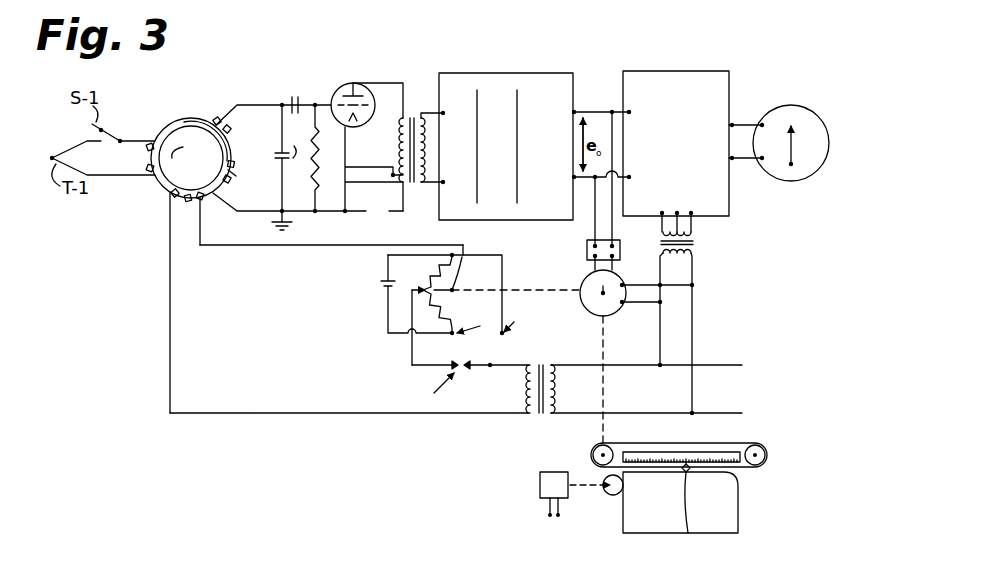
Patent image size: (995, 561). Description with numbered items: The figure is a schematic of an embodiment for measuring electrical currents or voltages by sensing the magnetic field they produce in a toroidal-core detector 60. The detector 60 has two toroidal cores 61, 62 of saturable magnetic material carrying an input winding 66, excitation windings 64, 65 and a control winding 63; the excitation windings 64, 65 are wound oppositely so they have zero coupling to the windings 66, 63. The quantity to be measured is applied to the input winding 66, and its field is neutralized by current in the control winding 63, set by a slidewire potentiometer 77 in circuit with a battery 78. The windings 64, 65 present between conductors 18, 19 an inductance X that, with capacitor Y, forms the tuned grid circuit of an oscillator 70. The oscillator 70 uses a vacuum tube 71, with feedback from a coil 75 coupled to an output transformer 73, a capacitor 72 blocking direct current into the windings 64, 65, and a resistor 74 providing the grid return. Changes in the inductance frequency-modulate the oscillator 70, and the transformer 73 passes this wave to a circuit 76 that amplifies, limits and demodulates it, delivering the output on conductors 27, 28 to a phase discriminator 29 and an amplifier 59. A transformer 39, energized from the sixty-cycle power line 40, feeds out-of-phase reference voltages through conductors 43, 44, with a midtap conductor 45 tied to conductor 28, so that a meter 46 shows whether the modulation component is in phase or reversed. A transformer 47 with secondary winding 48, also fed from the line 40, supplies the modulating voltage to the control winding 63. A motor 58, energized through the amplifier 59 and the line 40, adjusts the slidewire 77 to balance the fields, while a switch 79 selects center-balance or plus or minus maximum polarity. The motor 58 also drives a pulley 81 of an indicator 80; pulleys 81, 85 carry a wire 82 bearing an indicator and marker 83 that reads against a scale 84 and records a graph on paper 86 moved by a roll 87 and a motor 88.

The conductor 18 is at (246, 214).
The conductor 19 is at (241, 105).
The conductor 27 is at (598, 112).
The conductor 28 is at (580, 182).
The phase discriminator 29 is at (656, 71).
The transformer 39 is at (662, 253).
The electrical power line 40 is at (742, 365).
The conductor 43 is at (690, 233).
The conductor 44 is at (662, 233).
The conductor 45 is at (692, 245).
The meter 46 is at (781, 106).
The transformer 47 is at (540, 418).
The secondary winding 48 is at (525, 398).
The motor 58 is at (581, 298).
The amplifier 59 is at (586, 250).
The toroidal-core detector 60 is at (152, 208).
The toroidal core 61 is at (162, 128).
The toroidal core 62 is at (183, 115).
The control winding 63 is at (171, 204).
The excitation winding 64 is at (238, 122).
The excitation winding 65 is at (240, 160).
The input winding 66 is at (178, 158).
The oscillator 70 is at (401, 66).
The vacuum tube 71 is at (339, 94).
The capacitor 72 is at (296, 98).
The output transformer 73 is at (413, 118).
The resistor 74 is at (318, 172).
The coil 75 is at (393, 173).
The circuit 76 is at (520, 73).
The slidewire potentiometer 77 is at (465, 305).
The battery 78 is at (385, 285).
The switch 79 is at (470, 368).
The indicator 80 is at (655, 444).
The pulley 81 is at (594, 457).
The wire 82 is at (695, 445).
The indicator and marker 83 is at (690, 472).
The scale 84 is at (727, 452).
The pulley 85 is at (765, 456).
The paper 86 is at (738, 511).
The roll 87 is at (618, 496).
The motor 88 is at (541, 490).